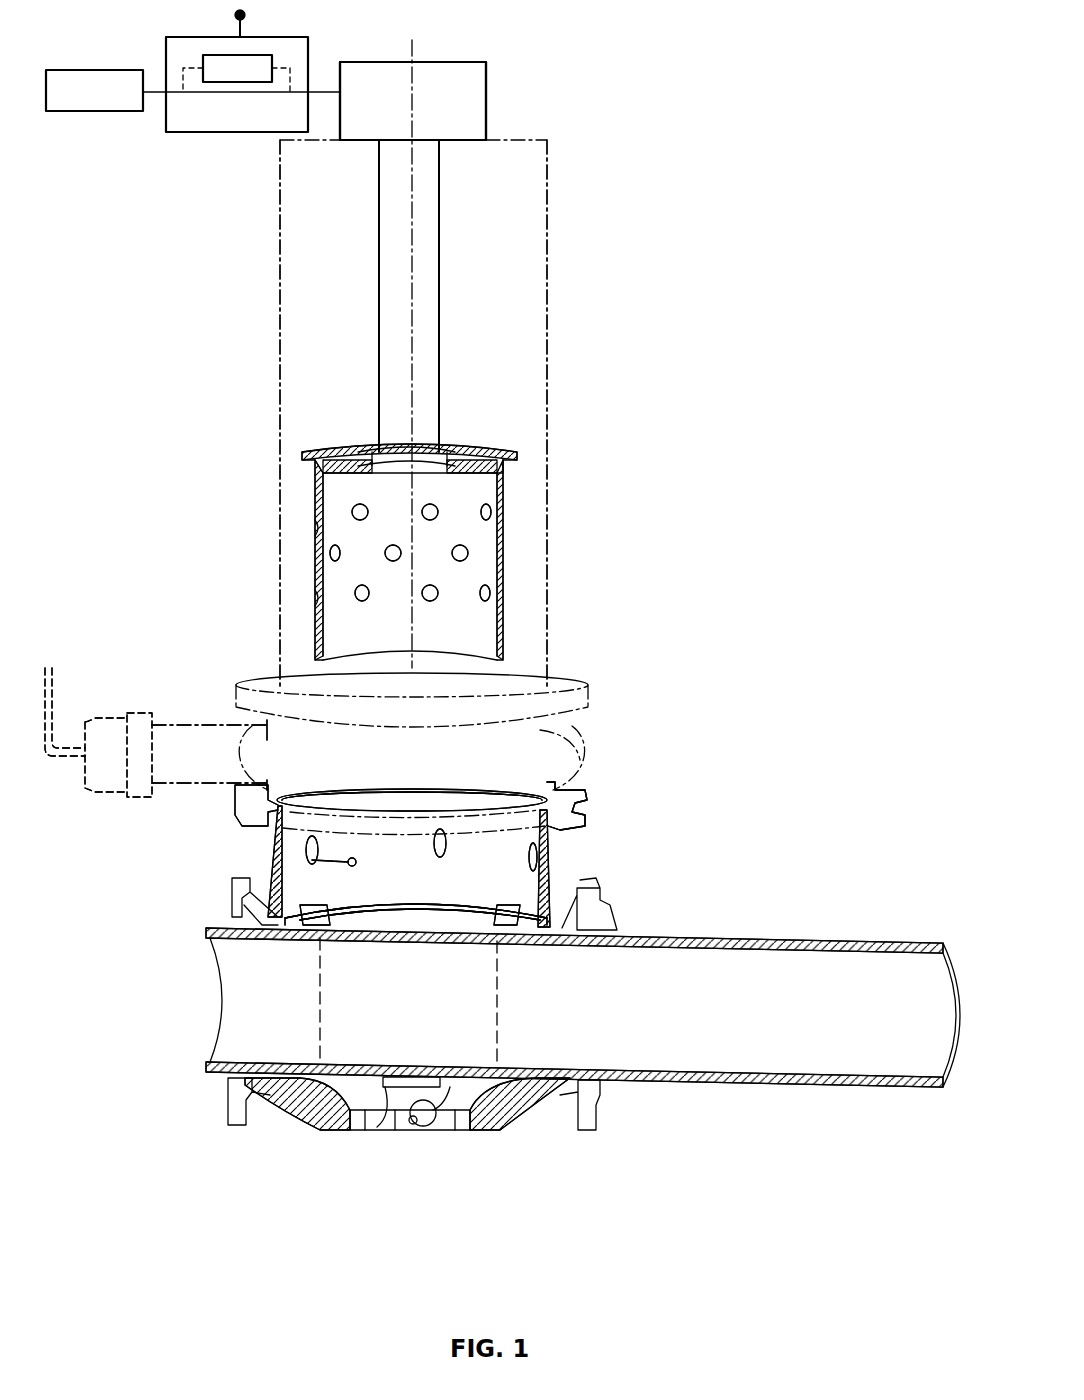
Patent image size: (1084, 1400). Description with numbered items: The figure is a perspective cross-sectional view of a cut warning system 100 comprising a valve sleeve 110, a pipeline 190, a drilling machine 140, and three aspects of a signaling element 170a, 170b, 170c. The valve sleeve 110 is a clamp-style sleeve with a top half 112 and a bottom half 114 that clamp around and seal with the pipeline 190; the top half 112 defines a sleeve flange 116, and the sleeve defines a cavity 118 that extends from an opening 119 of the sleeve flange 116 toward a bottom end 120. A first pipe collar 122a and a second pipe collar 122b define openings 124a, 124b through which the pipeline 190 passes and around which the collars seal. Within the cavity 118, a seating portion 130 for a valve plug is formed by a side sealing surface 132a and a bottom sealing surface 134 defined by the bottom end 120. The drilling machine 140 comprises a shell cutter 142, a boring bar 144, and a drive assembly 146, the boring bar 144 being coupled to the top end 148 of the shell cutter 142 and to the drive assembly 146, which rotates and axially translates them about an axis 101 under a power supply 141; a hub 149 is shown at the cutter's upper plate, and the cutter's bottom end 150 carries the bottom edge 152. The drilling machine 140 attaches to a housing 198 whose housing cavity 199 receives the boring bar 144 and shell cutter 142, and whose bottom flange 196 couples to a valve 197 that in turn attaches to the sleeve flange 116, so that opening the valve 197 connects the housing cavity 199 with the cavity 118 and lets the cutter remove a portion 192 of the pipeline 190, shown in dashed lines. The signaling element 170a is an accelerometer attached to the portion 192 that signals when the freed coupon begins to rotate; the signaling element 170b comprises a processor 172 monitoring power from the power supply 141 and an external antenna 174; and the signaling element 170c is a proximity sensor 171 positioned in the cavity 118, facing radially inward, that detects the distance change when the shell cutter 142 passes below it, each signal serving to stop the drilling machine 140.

The cut warning system 100 is at (146, 378).
The axis 101 is at (413, 313).
The valve sleeve 110 is at (278, 862).
The top half 112 is at (411, 854).
The bottom half 114 is at (540, 1100).
The sleeve flange 116 is at (585, 815).
The cavity 118 is at (331, 811).
The opening 119 is at (445, 792).
The bottom end 120 is at (498, 1138).
The first pipe collar 122a is at (236, 900).
The second pipe collar 122b is at (622, 920).
The opening 124a is at (220, 1082).
The opening 124b is at (618, 1090).
The seating portion 130 is at (545, 803).
The side sealing surface 132a is at (416, 914).
The bottom sealing surface 134 is at (443, 1135).
The drilling machine 140 is at (486, 90).
The power supply 141 is at (94, 91).
The shell cutter 142 is at (505, 560).
The boring bar 144 is at (440, 245).
The drive assembly 146 is at (486, 118).
The top end 148 is at (498, 452).
The hub 149 is at (468, 448).
The bottom end 150 is at (505, 652).
The bottom edge 152 is at (410, 552).
The signaling element 170a is at (340, 1132).
The signaling element 170b is at (241, 84).
The signaling element 170c is at (240, 852).
The sensor 171 is at (156, 732).
The processor 172 is at (236, 73).
The antenna 174 is at (238, 32).
The pipeline 190 is at (845, 942).
The portion 192 is at (345, 1020).
The bottom flange 196 is at (262, 672).
The valve 197 is at (583, 757).
The housing 198 is at (280, 264).
The housing cavity 199 is at (308, 230).